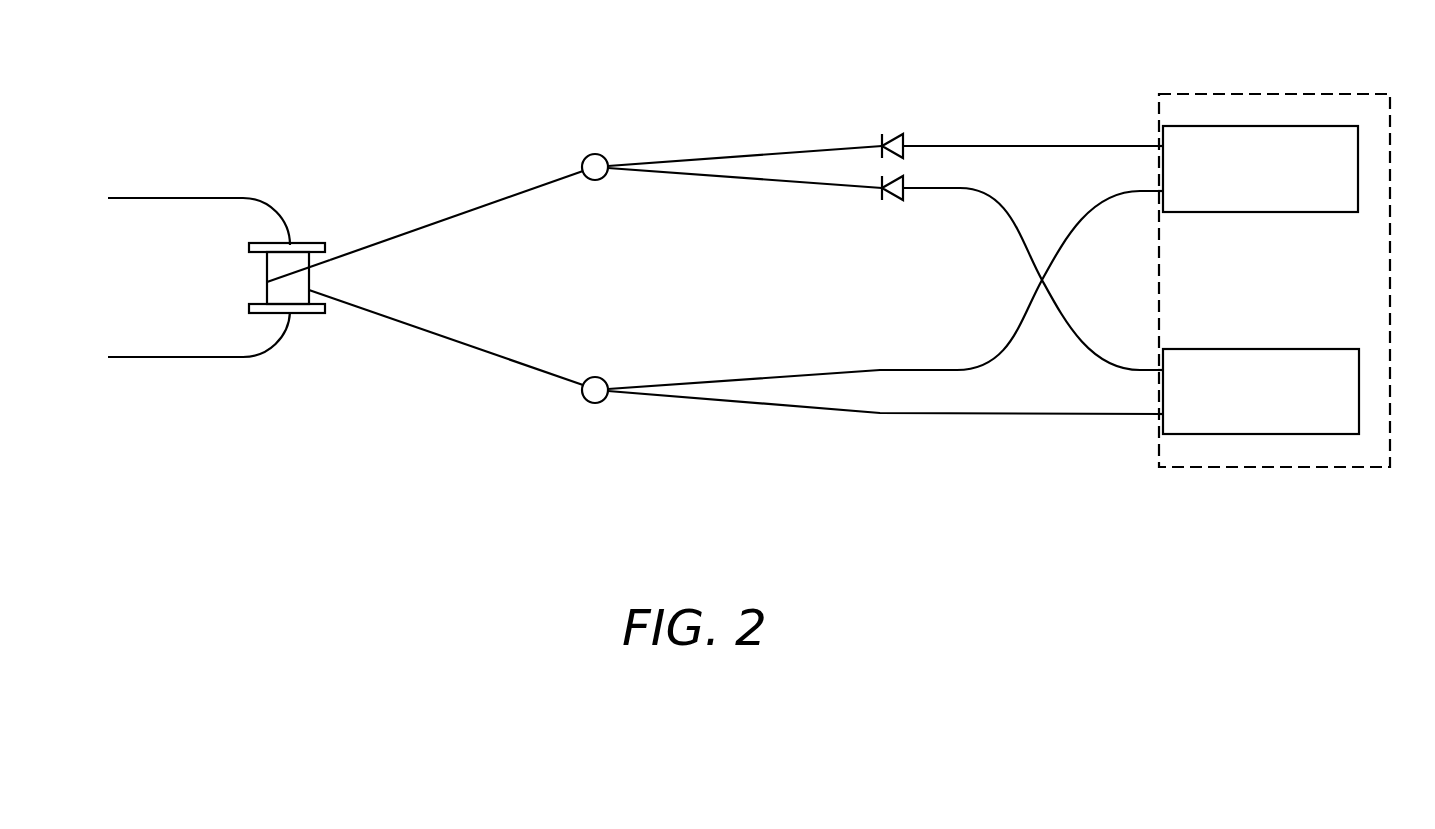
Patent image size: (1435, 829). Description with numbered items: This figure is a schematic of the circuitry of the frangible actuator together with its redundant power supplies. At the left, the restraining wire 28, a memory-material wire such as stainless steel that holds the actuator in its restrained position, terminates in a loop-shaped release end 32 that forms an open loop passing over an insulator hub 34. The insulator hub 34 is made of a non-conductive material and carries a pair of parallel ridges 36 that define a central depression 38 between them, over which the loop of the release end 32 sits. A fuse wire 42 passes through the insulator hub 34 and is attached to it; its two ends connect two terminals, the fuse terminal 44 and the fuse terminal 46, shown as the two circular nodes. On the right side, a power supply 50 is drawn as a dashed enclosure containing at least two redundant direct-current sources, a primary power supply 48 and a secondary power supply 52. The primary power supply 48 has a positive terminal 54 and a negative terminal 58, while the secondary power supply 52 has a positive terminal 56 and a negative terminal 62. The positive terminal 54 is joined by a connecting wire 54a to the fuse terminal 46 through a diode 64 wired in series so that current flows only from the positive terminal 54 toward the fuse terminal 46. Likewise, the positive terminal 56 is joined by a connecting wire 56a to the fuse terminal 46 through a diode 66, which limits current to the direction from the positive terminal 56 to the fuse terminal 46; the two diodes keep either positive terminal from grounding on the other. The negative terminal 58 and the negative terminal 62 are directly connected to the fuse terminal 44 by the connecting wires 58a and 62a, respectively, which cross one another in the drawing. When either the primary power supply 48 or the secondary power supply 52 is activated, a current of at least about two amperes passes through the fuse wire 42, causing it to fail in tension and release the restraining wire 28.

The restraining wire 28 is at (197, 186).
The loop-shaped release end 32 is at (163, 358).
The insulator hub 34 is at (240, 278).
The parallel ridges 36 is at (292, 243).
The central depression 38 is at (312, 286).
The fuse wire 42 is at (492, 199).
The fuse terminal 44 is at (590, 404).
The fuse terminal 46 is at (595, 154).
The primary power supply 48 is at (1260, 169).
The power supply 50 is at (1400, 148).
The secondary power supply 52 is at (1261, 391).
The positive terminal 54 is at (1163, 146).
The connecting wire 54a is at (745, 151).
The positive terminal 56 is at (1163, 370).
The connecting wire 56a is at (780, 187).
The negative terminal 58 is at (1162, 191).
The connecting wire 58a is at (880, 370).
The negative terminal 62 is at (1163, 414).
The connecting wire 62a is at (998, 415).
The diode 64 is at (893, 133).
The diode 66 is at (893, 200).